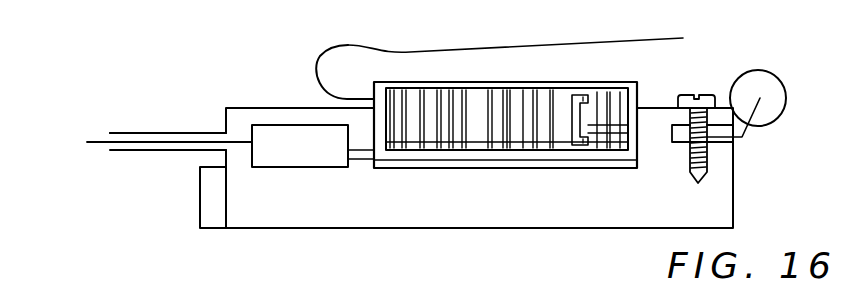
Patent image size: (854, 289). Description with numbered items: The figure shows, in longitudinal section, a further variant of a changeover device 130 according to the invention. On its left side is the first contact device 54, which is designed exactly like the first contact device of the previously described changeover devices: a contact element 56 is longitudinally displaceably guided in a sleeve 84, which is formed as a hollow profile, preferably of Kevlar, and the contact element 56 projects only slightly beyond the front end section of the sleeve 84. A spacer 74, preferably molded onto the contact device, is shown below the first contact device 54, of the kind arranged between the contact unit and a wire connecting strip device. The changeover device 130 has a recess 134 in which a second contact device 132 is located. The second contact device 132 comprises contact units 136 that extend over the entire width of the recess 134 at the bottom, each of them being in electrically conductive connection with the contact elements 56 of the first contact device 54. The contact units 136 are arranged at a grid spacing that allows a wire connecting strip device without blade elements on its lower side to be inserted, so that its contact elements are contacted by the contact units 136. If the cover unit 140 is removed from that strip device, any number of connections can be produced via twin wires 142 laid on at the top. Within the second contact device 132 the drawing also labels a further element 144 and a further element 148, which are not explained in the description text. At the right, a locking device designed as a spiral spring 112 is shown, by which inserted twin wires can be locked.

The first contact device 54 is at (128, 115).
The contact element 56 is at (100, 143).
The spacer 74 is at (203, 205).
The sleeve 84 is at (190, 132).
The spiral spring 112 is at (771, 73).
The changeover device 130 is at (313, 204).
The second contact device 132 is at (590, 160).
The recess 134 is at (407, 168).
The contact unit 136 is at (527, 150).
The cover unit 140 is at (423, 81).
The twin wires 142 is at (557, 43).
The plunger rod 144 is at (583, 102).
The spool 148 is at (576, 120).